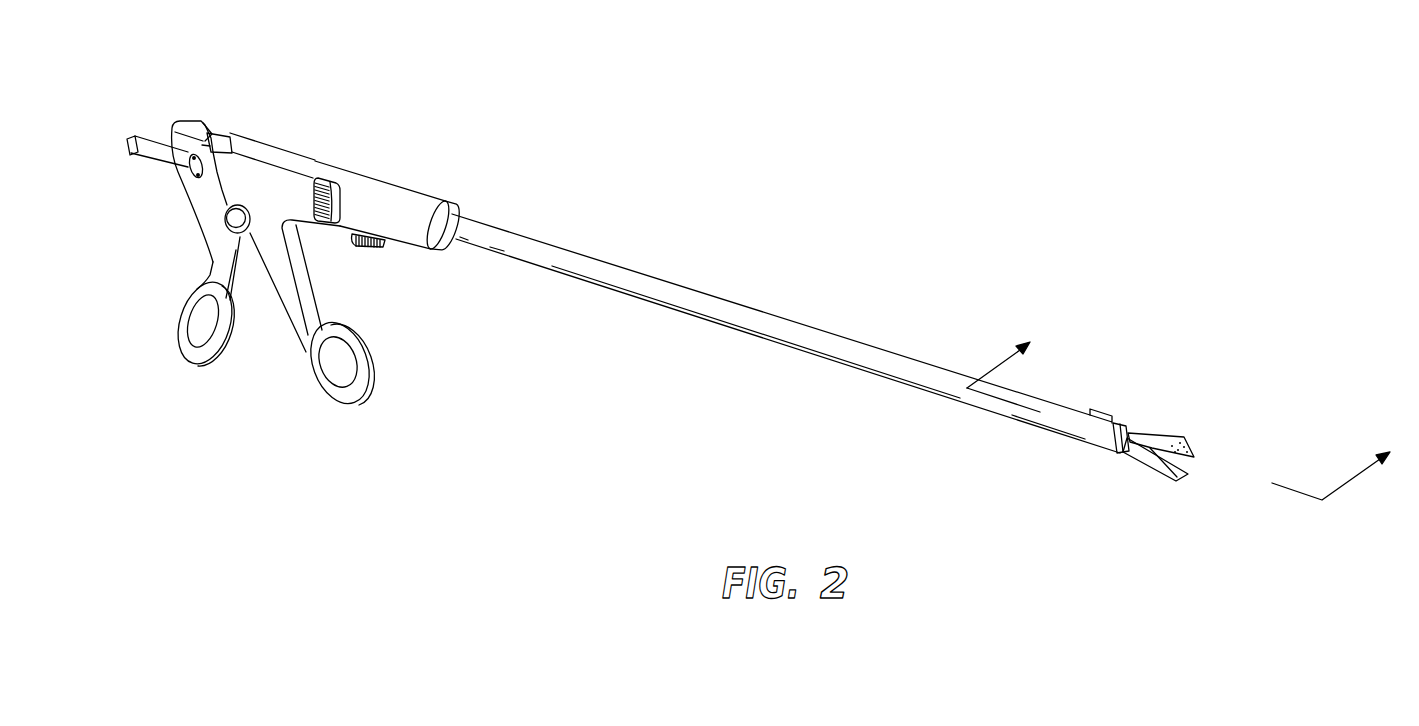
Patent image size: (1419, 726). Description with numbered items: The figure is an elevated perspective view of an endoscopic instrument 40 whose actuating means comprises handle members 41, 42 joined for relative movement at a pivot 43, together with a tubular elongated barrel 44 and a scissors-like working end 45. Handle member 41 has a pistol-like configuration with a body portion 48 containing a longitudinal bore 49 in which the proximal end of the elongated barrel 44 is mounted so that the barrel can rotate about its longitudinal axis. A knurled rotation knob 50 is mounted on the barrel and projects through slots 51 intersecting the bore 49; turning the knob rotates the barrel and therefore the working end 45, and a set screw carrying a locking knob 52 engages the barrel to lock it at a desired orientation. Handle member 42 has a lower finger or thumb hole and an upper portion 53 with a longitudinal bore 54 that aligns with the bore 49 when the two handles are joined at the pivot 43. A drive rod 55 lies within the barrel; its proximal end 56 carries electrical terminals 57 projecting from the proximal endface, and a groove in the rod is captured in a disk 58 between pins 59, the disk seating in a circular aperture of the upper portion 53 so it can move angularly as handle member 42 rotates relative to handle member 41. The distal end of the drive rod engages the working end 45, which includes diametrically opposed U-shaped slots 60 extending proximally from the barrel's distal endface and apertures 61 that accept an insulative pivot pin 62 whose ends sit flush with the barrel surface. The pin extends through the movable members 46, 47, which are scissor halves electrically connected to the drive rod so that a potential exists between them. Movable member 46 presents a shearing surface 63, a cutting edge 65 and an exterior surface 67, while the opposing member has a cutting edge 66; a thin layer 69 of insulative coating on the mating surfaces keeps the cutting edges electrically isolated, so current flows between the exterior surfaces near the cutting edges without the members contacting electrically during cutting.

The instrument 40 is at (702, 240).
The handle member 41 is at (322, 296).
The handle member 42 is at (211, 366).
The pivot 43 is at (225, 218).
The elongated barrel 44 is at (822, 331).
The working end 45 is at (1133, 471).
The movable member 46 is at (1196, 447).
The movable member 47 is at (1181, 481).
The body portion 48 is at (405, 187).
The longitudinal bore 49 is at (453, 207).
The knurled rotation knob 50 is at (320, 163).
The slots 51 is at (343, 196).
The locking knob 52 is at (370, 246).
The upper portion 53 is at (196, 120).
The longitudinal bore 54 is at (241, 133).
The drive rod 55 is at (136, 150).
The proximal end 56 is at (157, 133).
The electrical terminals 57 is at (131, 140).
The disk 58 is at (190, 172).
The pins 59 is at (208, 124).
The U-shaped slots 60 is at (1100, 418).
The apertures 61 is at (1072, 467).
The insulative pivot pin 62 is at (1117, 427).
The shearing surface 63 is at (1158, 433).
The cutting edge 65 is at (1200, 457).
The cutting edge 66 is at (1194, 479).
The exterior surface 67 is at (1138, 463).
The thin layer of insulative coating 69 is at (1184, 431).